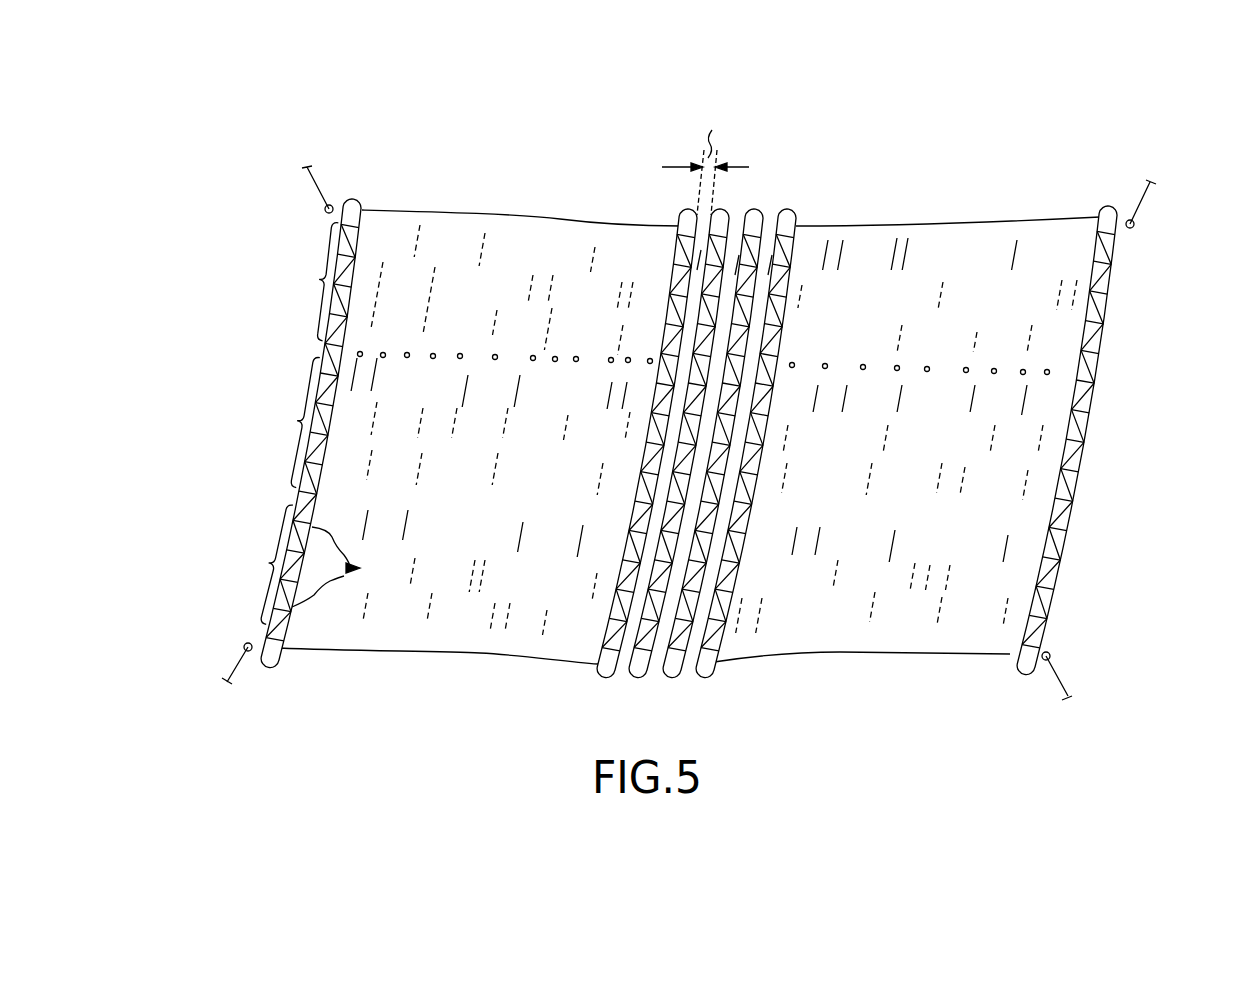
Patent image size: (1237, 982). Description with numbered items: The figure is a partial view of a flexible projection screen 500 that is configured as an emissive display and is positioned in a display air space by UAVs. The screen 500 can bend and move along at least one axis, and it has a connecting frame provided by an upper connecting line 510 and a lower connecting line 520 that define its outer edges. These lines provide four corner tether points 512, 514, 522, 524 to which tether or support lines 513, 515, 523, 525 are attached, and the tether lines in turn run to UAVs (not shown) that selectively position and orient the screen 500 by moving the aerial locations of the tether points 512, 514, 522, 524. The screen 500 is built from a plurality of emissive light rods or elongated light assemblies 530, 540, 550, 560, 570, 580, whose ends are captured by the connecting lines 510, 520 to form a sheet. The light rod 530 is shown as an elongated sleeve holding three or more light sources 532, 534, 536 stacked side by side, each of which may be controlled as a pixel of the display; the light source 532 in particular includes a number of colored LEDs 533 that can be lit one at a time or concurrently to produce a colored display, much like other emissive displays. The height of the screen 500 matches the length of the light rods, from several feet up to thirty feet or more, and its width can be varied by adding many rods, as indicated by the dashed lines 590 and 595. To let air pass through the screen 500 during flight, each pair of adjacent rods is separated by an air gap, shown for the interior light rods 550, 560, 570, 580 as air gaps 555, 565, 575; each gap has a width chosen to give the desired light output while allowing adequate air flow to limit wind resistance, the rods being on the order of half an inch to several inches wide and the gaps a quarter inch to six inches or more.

The projection screen 500 is at (1017, 136).
The upper connecting line 510 is at (508, 214).
The lower connecting line 520 is at (425, 658).
The tether point 512 is at (339, 204).
The tether line 513 is at (301, 178).
The tether point 514 is at (1133, 225).
The tether line 515 is at (1151, 198).
The tether point 522 is at (238, 647).
The tether line 523 is at (235, 668).
The tether point 524 is at (1051, 654).
The tether line 525 is at (1057, 680).
The light rod 530 is at (296, 433).
The light source 532 is at (275, 564).
The colored LEDs 533 is at (345, 567).
The light source 534 is at (302, 422).
The light source 536 is at (325, 281).
The light rod 540 is at (1114, 441).
The light rod 550 is at (669, 206).
The air gap 555 is at (695, 258).
The light rod 560 is at (740, 197).
The air gap 565 is at (736, 262).
The light rod 570 is at (766, 198).
The air gap 575 is at (774, 263).
The light rod 580 is at (800, 203).
The dashed line 590 is at (495, 354).
The dashed line 595 is at (899, 365).